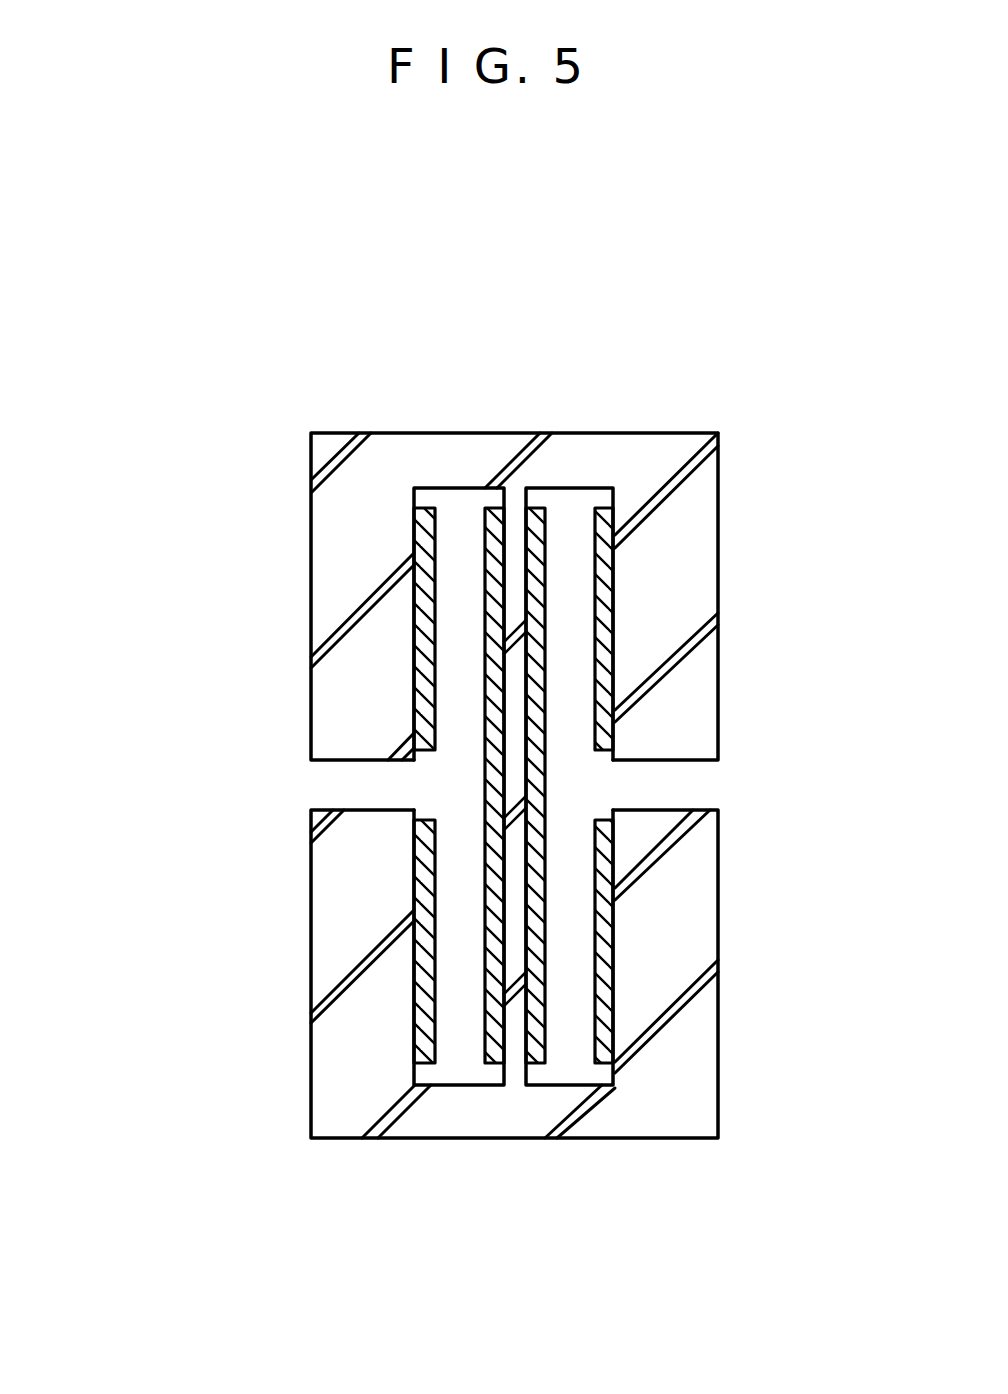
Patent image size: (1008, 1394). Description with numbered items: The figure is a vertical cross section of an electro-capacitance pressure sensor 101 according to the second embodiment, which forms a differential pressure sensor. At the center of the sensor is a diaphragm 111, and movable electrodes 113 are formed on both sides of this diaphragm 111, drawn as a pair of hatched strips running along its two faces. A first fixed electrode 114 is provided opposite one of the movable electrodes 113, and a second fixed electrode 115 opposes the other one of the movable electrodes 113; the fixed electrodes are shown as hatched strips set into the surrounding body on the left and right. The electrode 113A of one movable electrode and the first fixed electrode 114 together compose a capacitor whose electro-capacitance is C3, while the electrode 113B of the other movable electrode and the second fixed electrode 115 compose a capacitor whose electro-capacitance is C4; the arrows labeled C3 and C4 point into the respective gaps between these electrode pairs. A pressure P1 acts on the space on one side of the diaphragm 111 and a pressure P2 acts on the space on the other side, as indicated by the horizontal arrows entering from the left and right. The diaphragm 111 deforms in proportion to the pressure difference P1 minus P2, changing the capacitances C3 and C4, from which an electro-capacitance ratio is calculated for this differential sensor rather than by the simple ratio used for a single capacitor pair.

The electro-capacitance pressure sensor 101 is at (242, 368).
The diaphragm 111 is at (513, 973).
The movable electrodes 113 is at (516, 648).
The electrode 113A is at (487, 528).
The electrode 113B is at (544, 528).
The first fixed electrode 114 is at (425, 615).
The second fixed electrode 115 is at (602, 622).
The electro-capacitance C3 is at (462, 588).
The electro-capacitance C4 is at (573, 588).
The pressure P1 is at (262, 785).
The pressure P2 is at (853, 787).